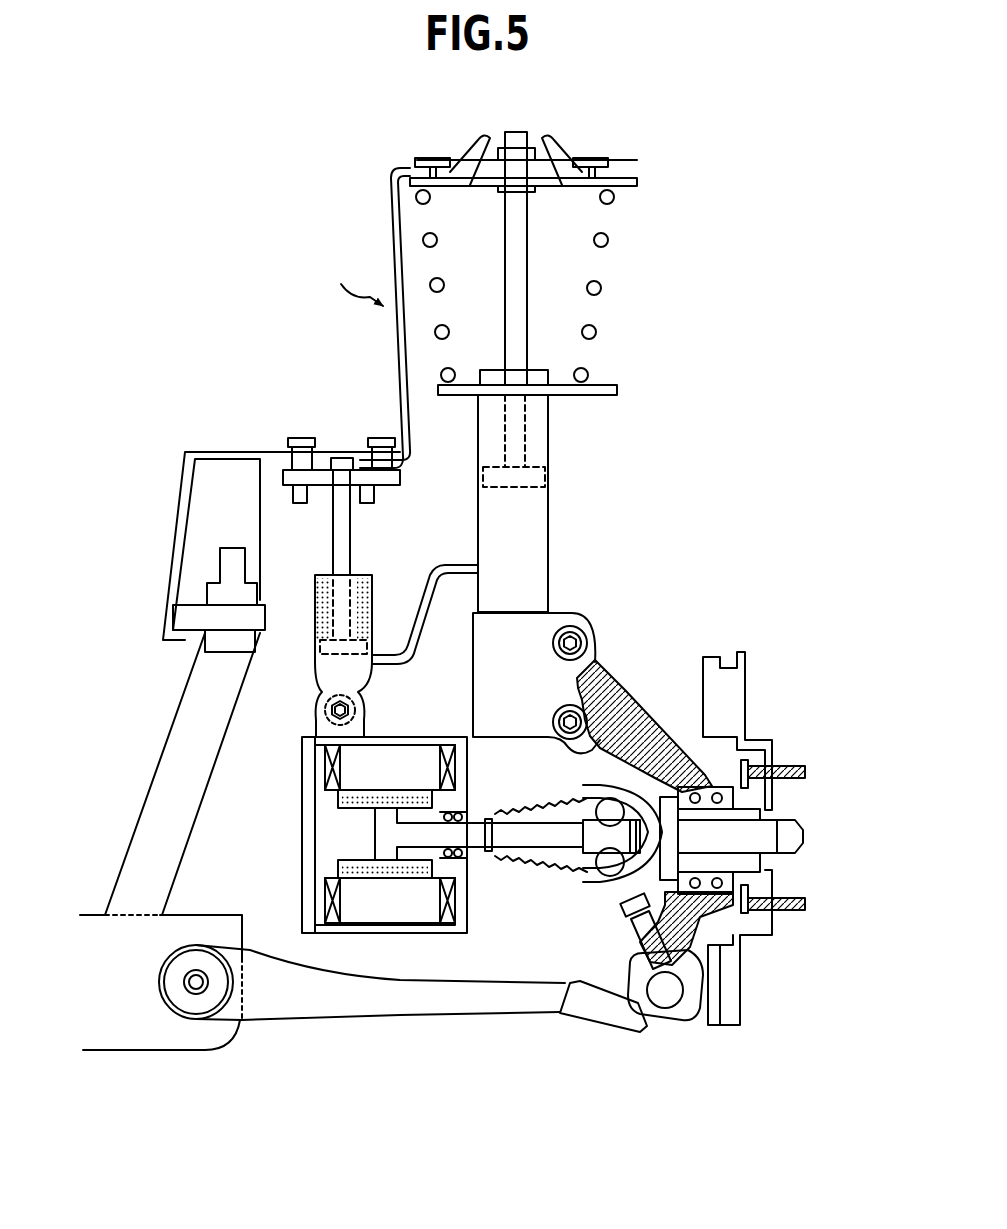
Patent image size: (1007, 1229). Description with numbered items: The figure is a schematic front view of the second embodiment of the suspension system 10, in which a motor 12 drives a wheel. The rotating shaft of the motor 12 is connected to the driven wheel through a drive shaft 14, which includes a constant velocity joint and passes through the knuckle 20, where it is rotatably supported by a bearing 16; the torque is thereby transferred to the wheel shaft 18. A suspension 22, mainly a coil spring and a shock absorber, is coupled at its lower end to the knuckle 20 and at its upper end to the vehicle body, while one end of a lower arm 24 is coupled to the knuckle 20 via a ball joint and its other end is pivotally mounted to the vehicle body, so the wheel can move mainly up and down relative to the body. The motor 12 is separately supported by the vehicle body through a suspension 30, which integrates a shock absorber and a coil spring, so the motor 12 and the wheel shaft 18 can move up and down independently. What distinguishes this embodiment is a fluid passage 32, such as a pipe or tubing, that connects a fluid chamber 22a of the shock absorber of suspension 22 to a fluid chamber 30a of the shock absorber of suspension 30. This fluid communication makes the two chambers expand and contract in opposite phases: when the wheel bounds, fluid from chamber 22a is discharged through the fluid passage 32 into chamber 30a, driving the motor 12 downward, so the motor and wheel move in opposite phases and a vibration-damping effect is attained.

The suspension system 10 is at (195, 195).
The motor 12 is at (390, 734).
The drive shaft 14 is at (531, 796).
The bearing 16 is at (712, 778).
The wheel shaft 18 is at (757, 843).
The knuckle 20 is at (618, 681).
The suspension 22 is at (567, 507).
The fluid chamber 22a is at (527, 578).
The lower arm 24 is at (352, 1015).
The suspension 30 is at (360, 567).
The fluid chamber 30a is at (326, 668).
The fluid passage 32 is at (454, 562).